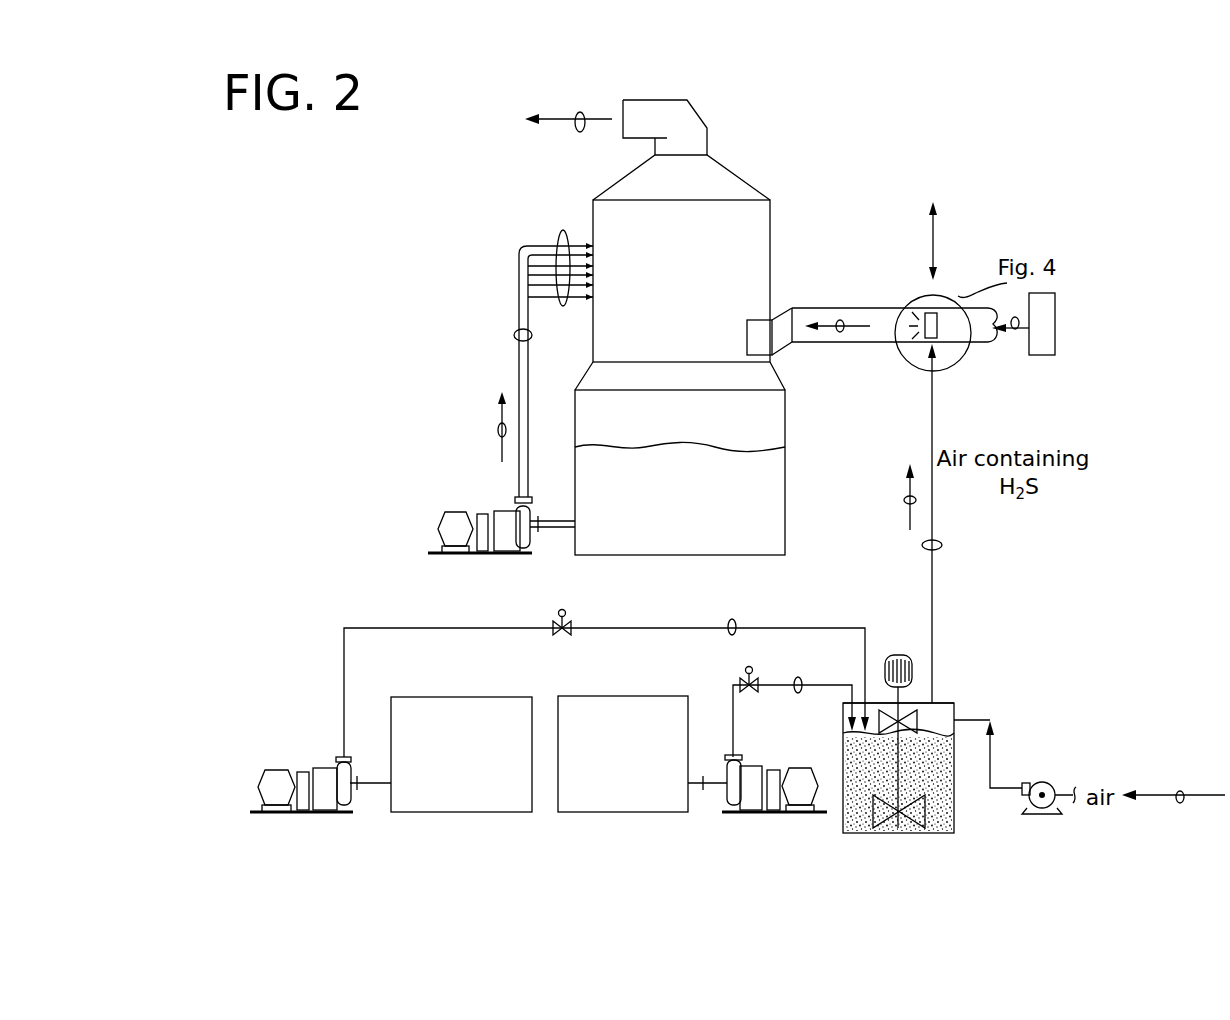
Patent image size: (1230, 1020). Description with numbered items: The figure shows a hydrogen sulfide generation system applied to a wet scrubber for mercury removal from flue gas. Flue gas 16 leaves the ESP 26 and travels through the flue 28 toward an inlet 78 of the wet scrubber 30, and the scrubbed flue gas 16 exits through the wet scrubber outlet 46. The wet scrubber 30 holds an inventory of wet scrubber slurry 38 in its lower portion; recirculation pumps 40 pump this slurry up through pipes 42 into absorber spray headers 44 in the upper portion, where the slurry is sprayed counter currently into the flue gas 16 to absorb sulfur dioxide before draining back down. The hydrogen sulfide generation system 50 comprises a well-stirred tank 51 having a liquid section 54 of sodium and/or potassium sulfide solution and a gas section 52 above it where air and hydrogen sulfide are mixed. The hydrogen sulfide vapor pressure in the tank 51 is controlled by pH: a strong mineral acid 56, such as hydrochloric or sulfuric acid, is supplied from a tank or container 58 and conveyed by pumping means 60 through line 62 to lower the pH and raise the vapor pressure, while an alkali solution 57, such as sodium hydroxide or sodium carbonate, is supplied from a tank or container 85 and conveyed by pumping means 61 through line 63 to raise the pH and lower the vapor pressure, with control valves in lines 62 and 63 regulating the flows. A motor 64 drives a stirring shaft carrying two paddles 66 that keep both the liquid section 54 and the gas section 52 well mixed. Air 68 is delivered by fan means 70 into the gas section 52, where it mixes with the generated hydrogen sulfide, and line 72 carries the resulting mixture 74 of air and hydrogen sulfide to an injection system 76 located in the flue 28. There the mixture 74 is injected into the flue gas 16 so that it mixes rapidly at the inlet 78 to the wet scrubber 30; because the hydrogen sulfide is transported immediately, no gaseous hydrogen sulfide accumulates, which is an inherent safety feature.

The flue gas 16 is at (581, 112).
The ESP 26 is at (1044, 355).
The flue 28 is at (847, 313).
The wet scrubber 30 is at (658, 276).
The wet scrubber slurry 38 is at (663, 497).
The recirculation pumps 40 is at (508, 545).
The pipes 42 is at (514, 335).
The absorber spray headers 44 is at (563, 240).
The wet scrubber outlet 46 is at (662, 107).
The H2S generation system 50 is at (1013, 644).
The tank 51 is at (843, 812).
The gas section 52 is at (946, 702).
The liquid section 54 is at (945, 815).
The strong mineral acid 56 is at (664, 704).
The alkali solution 57 is at (480, 705).
The tank or container 58 is at (631, 694).
The pumping means 60 is at (748, 775).
The pumping means 61 is at (326, 772).
The line 62 is at (798, 677).
The line 63 is at (732, 619).
The motor 64 is at (907, 656).
The paddles 66 is at (915, 723).
The air 68 is at (1181, 791).
The fan means 70 is at (1050, 785).
The line 72 is at (942, 545).
The mixture of air and H2S 74 is at (904, 500).
The injection system 76 is at (945, 297).
The inlet 78 is at (779, 300).
The tank or container 85 is at (411, 696).